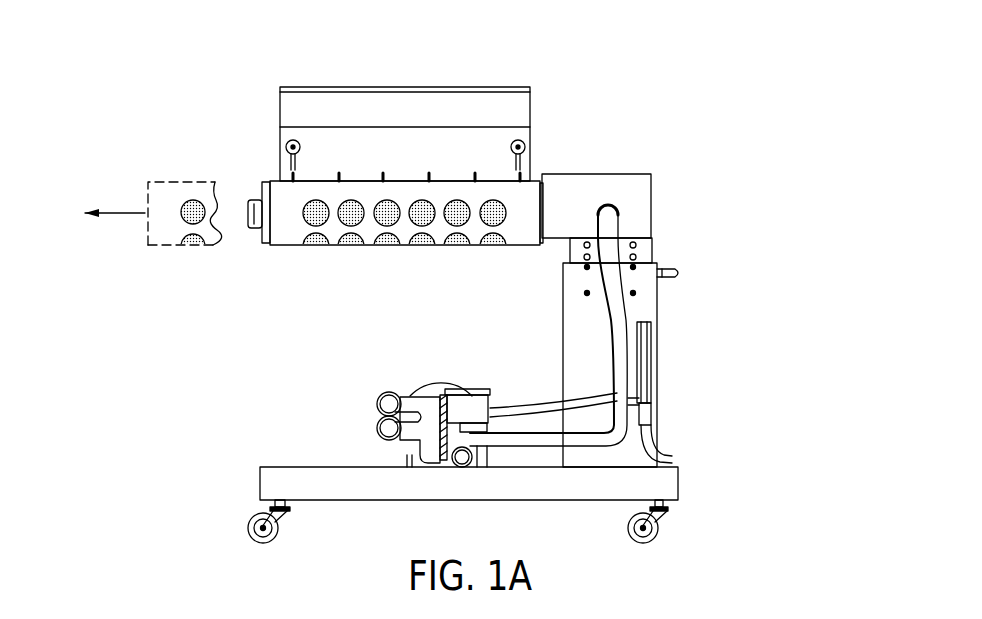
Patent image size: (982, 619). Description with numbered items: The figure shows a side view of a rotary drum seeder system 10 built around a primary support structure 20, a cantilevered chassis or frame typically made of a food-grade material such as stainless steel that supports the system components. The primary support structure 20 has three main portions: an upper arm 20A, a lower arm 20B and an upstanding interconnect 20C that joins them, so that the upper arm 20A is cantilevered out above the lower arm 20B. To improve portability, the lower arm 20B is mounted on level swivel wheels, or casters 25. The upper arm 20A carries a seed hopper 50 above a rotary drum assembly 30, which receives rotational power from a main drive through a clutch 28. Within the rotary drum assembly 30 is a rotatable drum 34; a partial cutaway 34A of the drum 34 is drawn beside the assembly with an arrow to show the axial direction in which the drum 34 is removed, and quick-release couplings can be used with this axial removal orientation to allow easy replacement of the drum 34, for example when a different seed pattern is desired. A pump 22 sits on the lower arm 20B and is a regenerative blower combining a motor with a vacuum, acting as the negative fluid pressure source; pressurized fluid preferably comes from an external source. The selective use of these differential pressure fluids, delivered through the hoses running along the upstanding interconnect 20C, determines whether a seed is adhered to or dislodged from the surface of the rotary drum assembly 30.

The rotary drum seeder system 10 is at (192, 73).
The seed hopper 50 is at (518, 87).
The rotary drum assembly 30 is at (505, 178).
The rotatable drum 34 is at (293, 232).
The partial cutaway 34A is at (170, 182).
The clutch 28 is at (624, 176).
The upper arm 20A is at (663, 216).
The upstanding interconnect 20C is at (678, 316).
The pump 22 is at (442, 383).
The lower arm 20B is at (253, 482).
The primary support structure 20 is at (672, 464).
The casters 25 is at (645, 545).